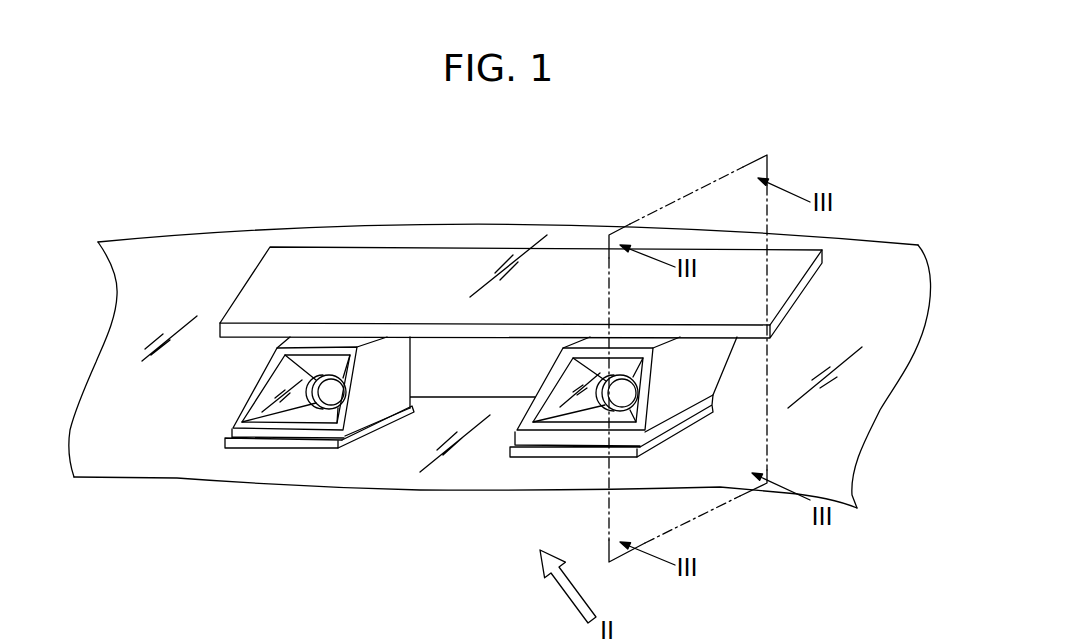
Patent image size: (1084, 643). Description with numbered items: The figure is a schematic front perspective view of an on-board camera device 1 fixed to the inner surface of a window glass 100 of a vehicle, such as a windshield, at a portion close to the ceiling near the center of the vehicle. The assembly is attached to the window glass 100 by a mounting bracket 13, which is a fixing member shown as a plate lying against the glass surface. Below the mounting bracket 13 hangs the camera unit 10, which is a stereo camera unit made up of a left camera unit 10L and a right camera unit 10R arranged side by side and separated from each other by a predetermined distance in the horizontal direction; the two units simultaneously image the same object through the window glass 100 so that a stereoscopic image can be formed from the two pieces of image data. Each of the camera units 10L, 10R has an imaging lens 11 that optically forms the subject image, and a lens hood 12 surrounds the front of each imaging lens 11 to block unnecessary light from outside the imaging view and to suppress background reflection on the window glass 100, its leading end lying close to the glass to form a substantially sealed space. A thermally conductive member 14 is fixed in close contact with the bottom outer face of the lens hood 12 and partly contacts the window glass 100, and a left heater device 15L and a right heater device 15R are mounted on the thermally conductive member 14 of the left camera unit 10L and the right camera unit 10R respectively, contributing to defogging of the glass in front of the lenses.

The on-board camera device 1 is at (501, 370).
The camera unit 10 is at (458, 472).
The right camera unit 10R is at (243, 456).
The left camera unit 10L is at (527, 470).
The imaging lens 11 is at (330, 392).
The lens hood 12 is at (362, 416).
The mounting bracket 13 is at (393, 267).
The thermally conductive member 14 is at (333, 447).
The right heater device 15R is at (388, 422).
The left heater device 15L is at (675, 454).
The window glass 100 is at (200, 250).